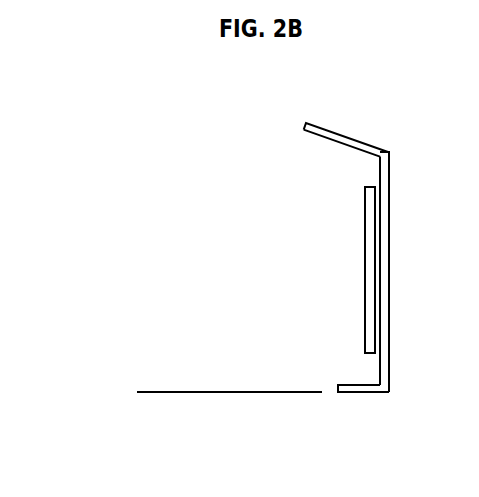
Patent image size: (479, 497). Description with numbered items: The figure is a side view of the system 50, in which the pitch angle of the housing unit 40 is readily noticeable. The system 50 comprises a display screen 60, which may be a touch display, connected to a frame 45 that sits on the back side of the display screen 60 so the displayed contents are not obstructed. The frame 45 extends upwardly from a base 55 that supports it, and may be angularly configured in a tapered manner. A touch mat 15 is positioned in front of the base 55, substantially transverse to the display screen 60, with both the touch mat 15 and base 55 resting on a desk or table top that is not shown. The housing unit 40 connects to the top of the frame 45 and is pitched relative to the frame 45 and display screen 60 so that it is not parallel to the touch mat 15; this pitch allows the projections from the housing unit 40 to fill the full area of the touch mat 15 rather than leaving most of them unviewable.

The touch mat 15 is at (165, 395).
The housing unit 40 is at (340, 130).
The frame 45 is at (390, 282).
The system 50 is at (95, 168).
The base 55 is at (362, 395).
The display screen 60 is at (365, 228).